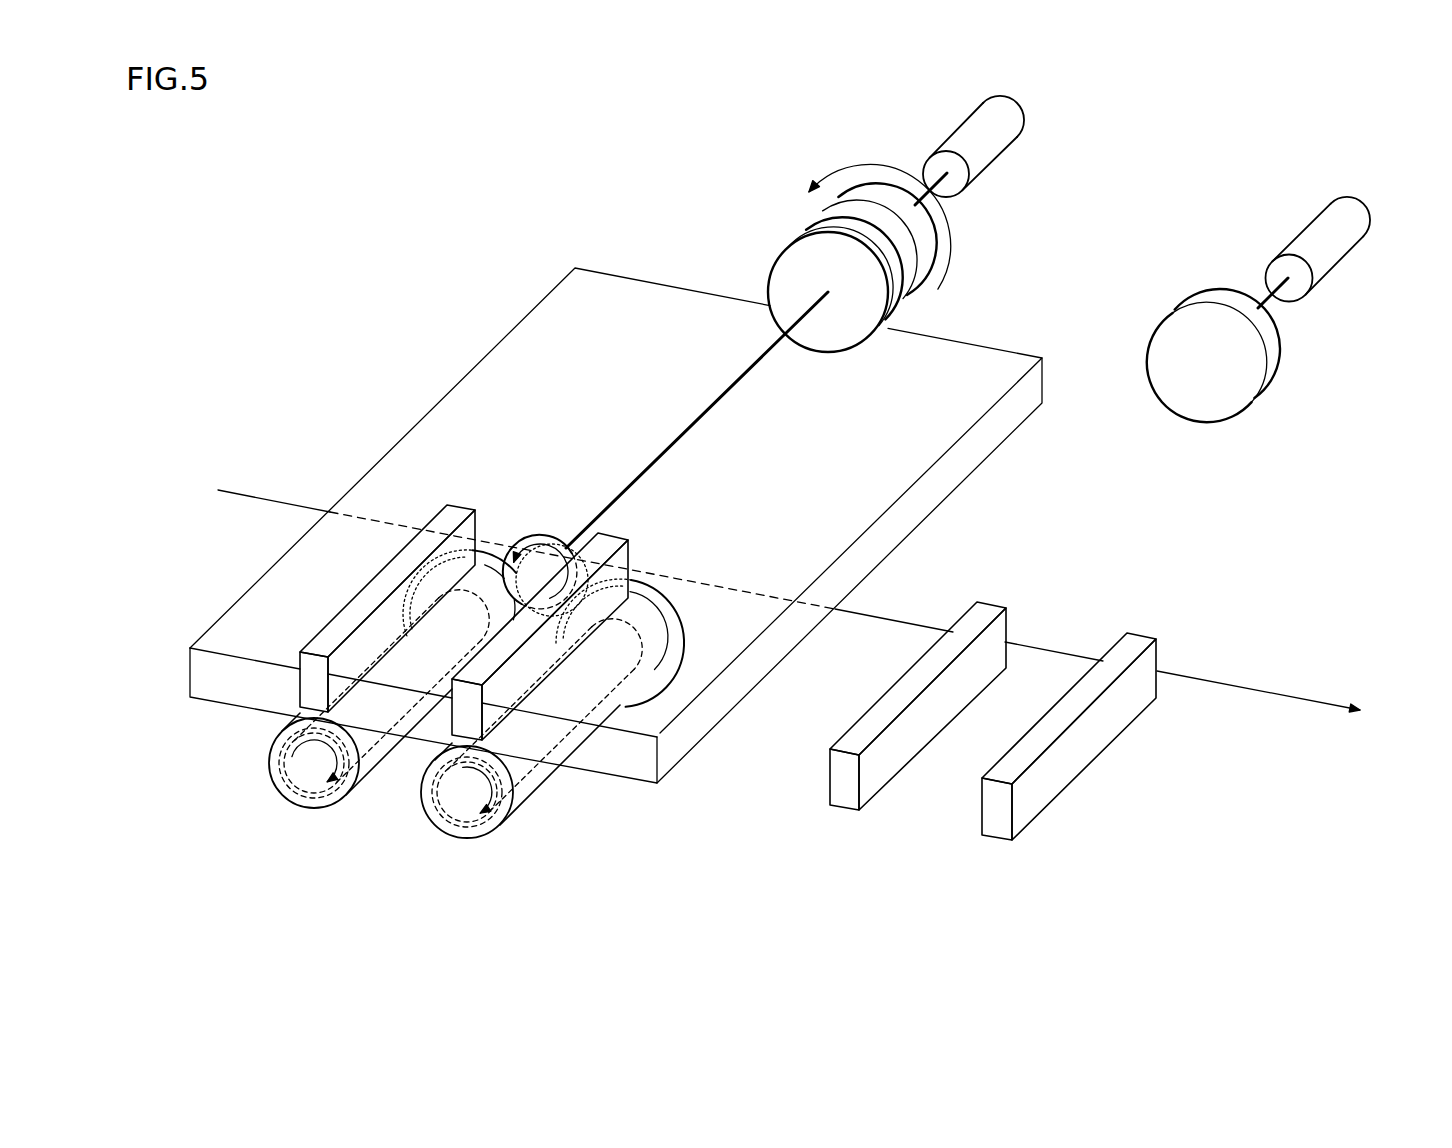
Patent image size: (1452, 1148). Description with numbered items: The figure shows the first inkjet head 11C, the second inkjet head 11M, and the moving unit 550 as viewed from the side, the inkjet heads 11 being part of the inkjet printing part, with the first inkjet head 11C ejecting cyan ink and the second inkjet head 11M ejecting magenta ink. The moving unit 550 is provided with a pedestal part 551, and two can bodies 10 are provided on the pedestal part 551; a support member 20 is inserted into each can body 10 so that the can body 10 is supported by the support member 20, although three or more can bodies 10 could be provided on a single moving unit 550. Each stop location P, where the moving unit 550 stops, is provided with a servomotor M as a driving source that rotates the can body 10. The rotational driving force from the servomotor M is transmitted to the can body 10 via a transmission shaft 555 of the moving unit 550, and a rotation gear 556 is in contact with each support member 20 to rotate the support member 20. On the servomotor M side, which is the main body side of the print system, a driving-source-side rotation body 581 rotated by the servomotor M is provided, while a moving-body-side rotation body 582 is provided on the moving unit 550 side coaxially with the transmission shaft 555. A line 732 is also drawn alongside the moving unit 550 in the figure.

The can body 10 is at (272, 777).
The support member 20 is at (478, 590).
The inkjet head 11 is at (728, 721).
The first inkjet head 11C is at (468, 715).
The second inkjet head 11M is at (995, 820).
The pedestal part 551 is at (230, 688).
The transmission shaft 555 is at (750, 370).
The rotation gear 556 is at (557, 537).
The driving-source-side rotation body 581 is at (932, 232).
The moving-body-side rotation body 582 is at (840, 353).
The moving unit 550 is at (983, 313).
The transport path 732 is at (285, 498).
The stop location P is at (712, 245).
The servomotor M is at (1023, 99).